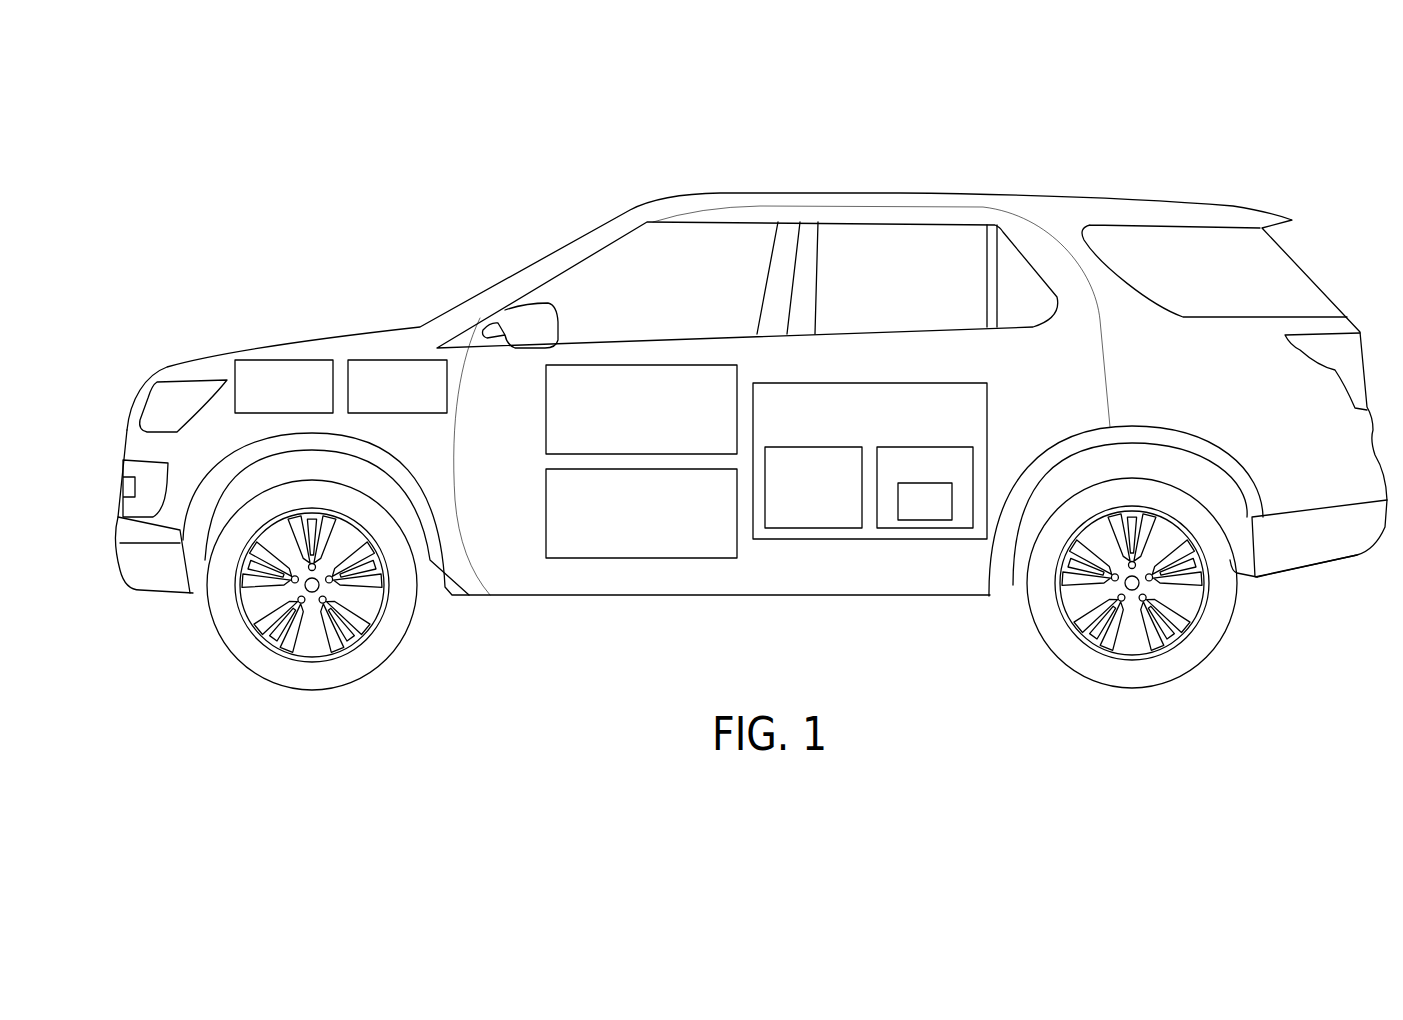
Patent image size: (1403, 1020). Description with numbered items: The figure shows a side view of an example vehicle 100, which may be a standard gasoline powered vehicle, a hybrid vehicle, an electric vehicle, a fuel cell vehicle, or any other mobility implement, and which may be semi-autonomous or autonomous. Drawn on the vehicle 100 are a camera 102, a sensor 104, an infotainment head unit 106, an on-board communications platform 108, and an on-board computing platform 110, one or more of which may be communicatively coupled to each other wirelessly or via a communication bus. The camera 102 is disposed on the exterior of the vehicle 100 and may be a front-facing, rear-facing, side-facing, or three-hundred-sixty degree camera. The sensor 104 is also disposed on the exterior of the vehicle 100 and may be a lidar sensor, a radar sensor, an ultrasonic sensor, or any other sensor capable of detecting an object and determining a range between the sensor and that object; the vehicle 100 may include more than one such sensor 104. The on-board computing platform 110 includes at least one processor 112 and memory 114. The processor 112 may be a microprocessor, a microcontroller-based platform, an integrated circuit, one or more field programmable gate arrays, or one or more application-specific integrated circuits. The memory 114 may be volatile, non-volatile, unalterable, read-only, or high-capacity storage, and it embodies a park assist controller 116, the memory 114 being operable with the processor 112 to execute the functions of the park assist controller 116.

The vehicle 100 is at (464, 163).
The camera 102 is at (283, 360).
The sensor 104 is at (373, 360).
The infotainment head unit 106 is at (546, 410).
The on-board communications platform 108 is at (546, 513).
The on-board computing platform 110 is at (867, 539).
The processor 112 is at (813, 528).
The memory 114 is at (925, 528).
The park assist controller 116 is at (943, 513).